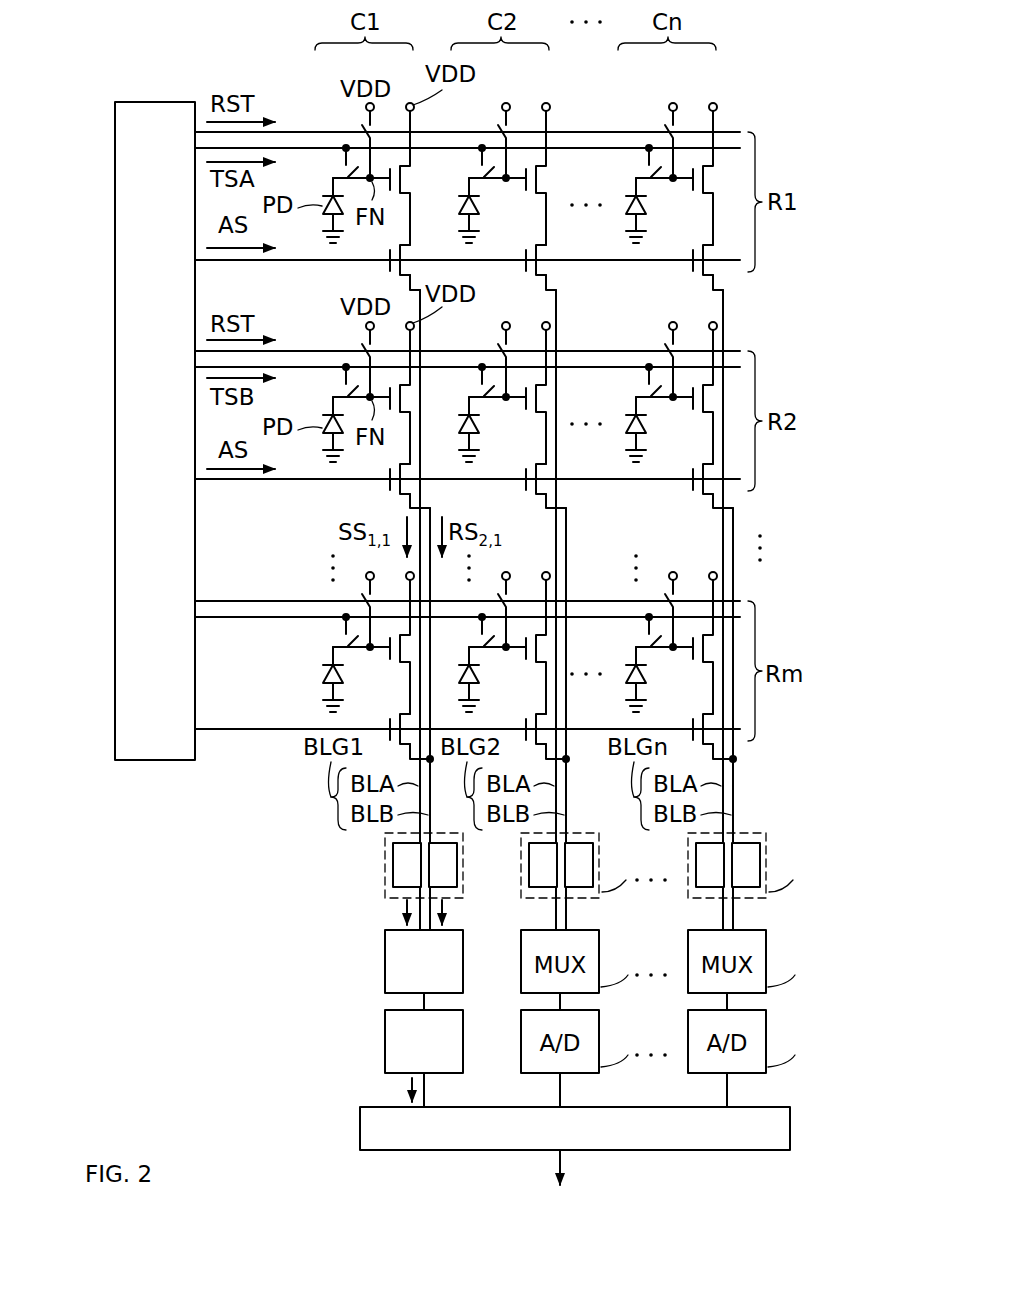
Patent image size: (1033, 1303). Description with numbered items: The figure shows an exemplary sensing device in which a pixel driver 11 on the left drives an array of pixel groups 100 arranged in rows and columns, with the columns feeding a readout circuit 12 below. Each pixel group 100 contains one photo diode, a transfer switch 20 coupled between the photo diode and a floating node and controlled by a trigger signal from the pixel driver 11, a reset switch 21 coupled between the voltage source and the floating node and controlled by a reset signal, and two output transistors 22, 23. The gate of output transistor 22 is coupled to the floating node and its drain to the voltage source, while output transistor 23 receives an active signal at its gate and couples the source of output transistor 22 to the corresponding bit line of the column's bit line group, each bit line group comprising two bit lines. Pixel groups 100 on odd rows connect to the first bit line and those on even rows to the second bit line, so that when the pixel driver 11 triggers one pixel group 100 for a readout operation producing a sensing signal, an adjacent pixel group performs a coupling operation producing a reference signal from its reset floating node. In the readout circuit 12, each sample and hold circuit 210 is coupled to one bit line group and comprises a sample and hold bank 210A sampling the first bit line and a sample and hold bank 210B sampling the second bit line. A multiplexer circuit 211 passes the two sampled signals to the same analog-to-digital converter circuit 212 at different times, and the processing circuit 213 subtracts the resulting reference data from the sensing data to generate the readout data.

The pixel driver 11 is at (116, 106).
The pixel group 100 is at (357, 277).
The transfer switch 20 is at (346, 172).
The reset switch 21 is at (363, 125).
The output transistor 22 is at (411, 186).
The output transistor 23 is at (452, 244).
The readout circuit 12 is at (508, 1011).
The sample and hold circuit 210 is at (561, 970).
The sample and hold bank 210A is at (392, 854).
The sample and hold bank 210B is at (381, 867).
The multiplexer circuit 211 is at (465, 987).
The analog-to-digital converter circuit 212 is at (465, 1067).
The processing circuit 213 is at (360, 1131).